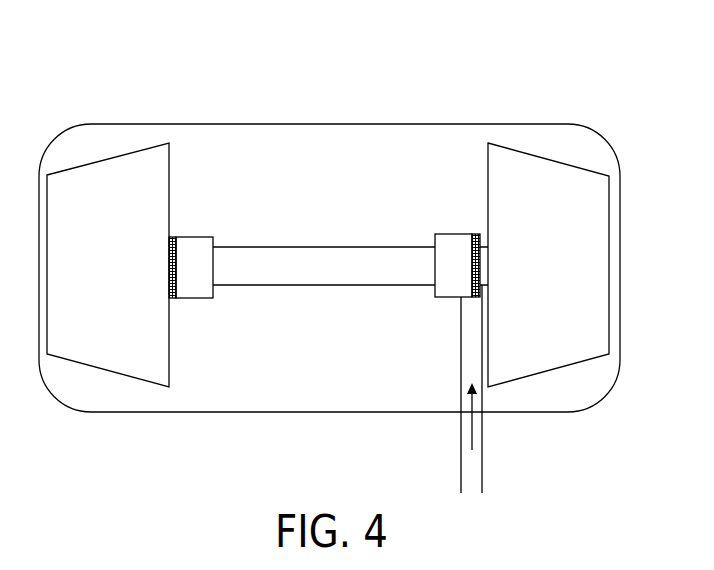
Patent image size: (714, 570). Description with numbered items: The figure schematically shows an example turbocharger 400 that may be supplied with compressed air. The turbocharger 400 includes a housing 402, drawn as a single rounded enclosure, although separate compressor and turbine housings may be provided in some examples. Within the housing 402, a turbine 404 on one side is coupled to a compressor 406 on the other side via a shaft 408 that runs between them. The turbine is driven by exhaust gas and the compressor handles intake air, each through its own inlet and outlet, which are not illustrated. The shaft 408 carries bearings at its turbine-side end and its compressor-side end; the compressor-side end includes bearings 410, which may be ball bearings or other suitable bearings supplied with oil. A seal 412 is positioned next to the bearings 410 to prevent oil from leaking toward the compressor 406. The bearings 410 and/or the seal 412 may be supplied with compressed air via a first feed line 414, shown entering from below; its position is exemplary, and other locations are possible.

The turbocharger 400 is at (601, 68).
The housing 402 is at (525, 124).
The turbine 404 is at (115, 270).
The compressor 406 is at (573, 268).
The shaft 408 is at (255, 247).
The bearings 410 is at (440, 235).
The seal 412 is at (477, 233).
The first feed line 414 is at (461, 362).